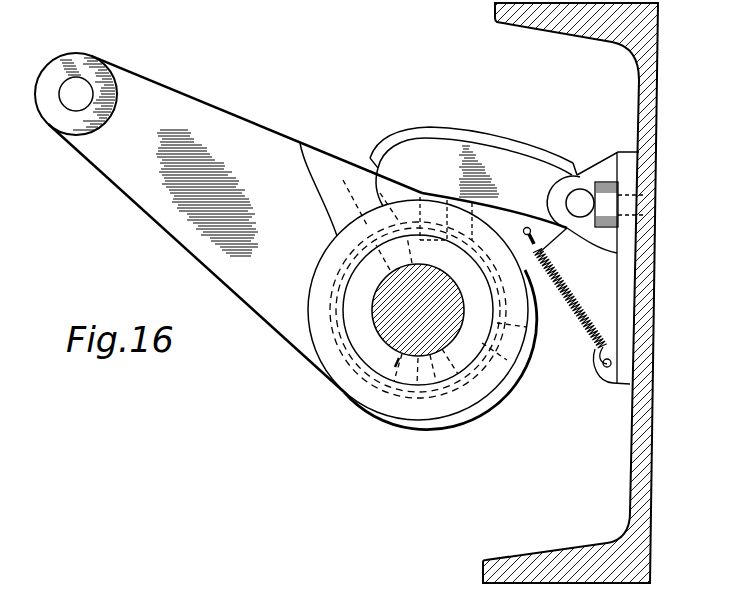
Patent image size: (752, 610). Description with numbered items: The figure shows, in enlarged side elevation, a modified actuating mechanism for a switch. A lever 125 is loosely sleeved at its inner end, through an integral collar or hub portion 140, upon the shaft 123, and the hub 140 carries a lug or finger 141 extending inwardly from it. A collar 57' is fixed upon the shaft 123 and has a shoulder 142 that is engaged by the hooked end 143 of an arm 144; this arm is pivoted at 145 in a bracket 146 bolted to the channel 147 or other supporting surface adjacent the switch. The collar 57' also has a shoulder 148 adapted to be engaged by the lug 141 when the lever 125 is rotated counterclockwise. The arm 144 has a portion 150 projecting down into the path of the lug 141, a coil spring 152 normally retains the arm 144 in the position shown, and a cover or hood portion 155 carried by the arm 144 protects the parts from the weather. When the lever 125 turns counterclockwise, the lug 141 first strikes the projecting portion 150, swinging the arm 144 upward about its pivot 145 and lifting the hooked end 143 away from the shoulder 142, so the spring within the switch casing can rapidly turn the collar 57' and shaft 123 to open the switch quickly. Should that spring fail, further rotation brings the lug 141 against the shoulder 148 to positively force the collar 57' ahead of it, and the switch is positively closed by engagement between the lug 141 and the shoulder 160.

The lever 125 is at (127, 165).
The collar or hub portion 140 is at (373, 390).
The shaft 123 is at (360, 350).
The collar 57' is at (418, 361).
The lug or finger 141 is at (507, 360).
The shoulder 160 is at (486, 382).
The hooked end 143 is at (398, 150).
The cover or hood portion 155 is at (400, 150).
The arm 144 is at (486, 150).
The shoulder 142 is at (425, 208).
The shoulder 148 is at (450, 210).
The pivot 145 is at (587, 203).
The bracket 146 is at (613, 168).
The channel 147 is at (652, 118).
The projecting portion 150 is at (543, 235).
The coil spring 152 is at (580, 303).